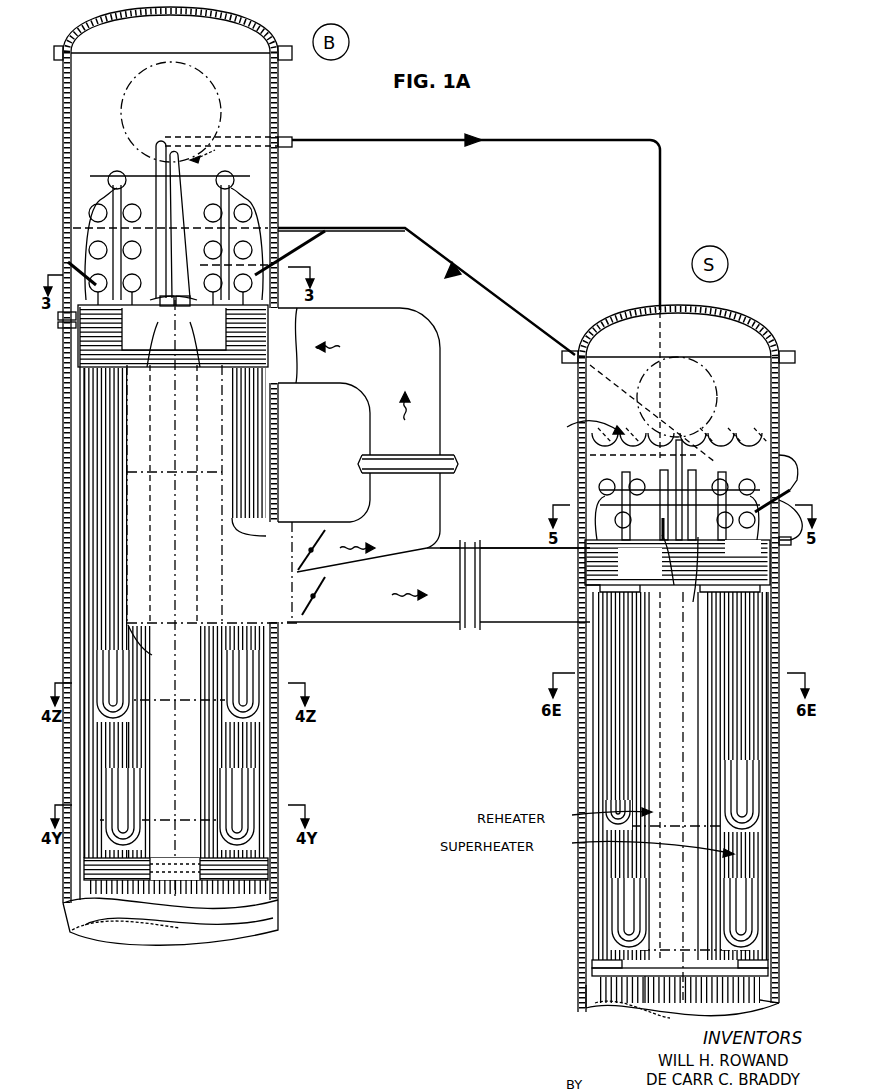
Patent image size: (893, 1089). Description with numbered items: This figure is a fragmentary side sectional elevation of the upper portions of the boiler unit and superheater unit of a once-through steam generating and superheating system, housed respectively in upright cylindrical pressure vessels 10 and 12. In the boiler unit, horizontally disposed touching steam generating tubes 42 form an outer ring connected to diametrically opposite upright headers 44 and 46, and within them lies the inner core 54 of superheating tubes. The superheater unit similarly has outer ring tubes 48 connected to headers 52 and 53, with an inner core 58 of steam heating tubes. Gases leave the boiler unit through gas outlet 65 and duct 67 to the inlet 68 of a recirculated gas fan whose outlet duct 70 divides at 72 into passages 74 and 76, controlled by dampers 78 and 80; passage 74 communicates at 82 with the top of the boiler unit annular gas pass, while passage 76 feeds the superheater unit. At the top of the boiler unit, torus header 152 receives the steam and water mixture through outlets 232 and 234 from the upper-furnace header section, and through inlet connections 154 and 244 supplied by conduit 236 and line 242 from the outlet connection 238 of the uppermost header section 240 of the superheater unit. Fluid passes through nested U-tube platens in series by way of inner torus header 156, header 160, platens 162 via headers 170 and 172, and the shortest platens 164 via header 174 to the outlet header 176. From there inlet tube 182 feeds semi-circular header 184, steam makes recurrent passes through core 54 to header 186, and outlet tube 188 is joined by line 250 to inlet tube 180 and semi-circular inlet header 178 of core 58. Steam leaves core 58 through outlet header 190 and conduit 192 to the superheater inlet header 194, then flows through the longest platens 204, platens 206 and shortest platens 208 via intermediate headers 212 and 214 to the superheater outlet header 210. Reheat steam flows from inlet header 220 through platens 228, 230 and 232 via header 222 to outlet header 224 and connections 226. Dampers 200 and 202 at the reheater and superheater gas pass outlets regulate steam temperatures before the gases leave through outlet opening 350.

The pressure vessel 10 is at (298, 928).
The pressure vessel 12 is at (575, 910).
The steam generating tubes 42 is at (187, 335).
The upright header 44 is at (82, 410).
The upright header 46 is at (273, 784).
The steam generating tubes 48 is at (677, 566).
The header 52 is at (592, 958).
The header 53 is at (783, 985).
The inner core 54 is at (203, 677).
The inner core 58 is at (705, 712).
The gas outlet 65 is at (188, 90).
The duct 67 is at (252, 134).
The inlet of recirculated gas fan 68 is at (127, 437).
The outlet duct 70 is at (233, 510).
The division point of outlet duct 72 is at (400, 557).
The gas flow passage 74 is at (417, 503).
The gas flow passage 76 is at (450, 591).
The damper 78 is at (315, 540).
The damper 80 is at (307, 613).
The communication opening 82 is at (287, 368).
The torus header 152 is at (213, 283).
The inlet connection 154 is at (70, 272).
The inner torus header 156 is at (132, 283).
The torus header 160 is at (88, 240).
The platens 162 is at (136, 788).
The shortest platens 164 is at (127, 670).
The header 170 is at (134, 250).
The header 172 is at (90, 210).
The header 174 is at (130, 213).
The outlet header 176 is at (120, 173).
The semi-circular inlet header 178 is at (675, 568).
The inlet tube 180 is at (663, 518).
The inlet tube 182 is at (182, 153).
The semi-circular header 184 is at (202, 351).
The header 186 is at (149, 351).
The outlet tube 188 is at (152, 150).
The semi-circular outlet header 190 is at (685, 577).
The outlet conduit 192 is at (790, 458).
The semi-circular header 194 is at (748, 530).
The damper 200 is at (717, 434).
The damper 202 is at (580, 423).
The longest superheater platens 204 is at (750, 1003).
The superheater platens 206 is at (754, 901).
The shortest superheater platens 208 is at (755, 783).
The superheater outlet header 210 is at (688, 478).
The intermediate superheater header 212 is at (729, 478).
The intermediate superheater header 214 is at (748, 523).
The reheater inlet header 220 is at (605, 488).
The reheater header 222 is at (636, 479).
The reheater outlet header 224 is at (627, 520).
The reheater outlet connections 226 is at (580, 467).
The longest reheater platens 228 is at (645, 1003).
The intermediate reheater platens 230 is at (642, 901).
The shortest reheater platens 232 is at (76, 345).
The outlet 234 is at (62, 318).
The conduit 236 is at (298, 228).
The outlet connection 238 is at (781, 544).
The uppermost header section 240 is at (772, 601).
The line 242 is at (497, 292).
The inlet connection 244 is at (298, 253).
The conduit 250 is at (346, 138).
The outlet opening 350 is at (686, 384).